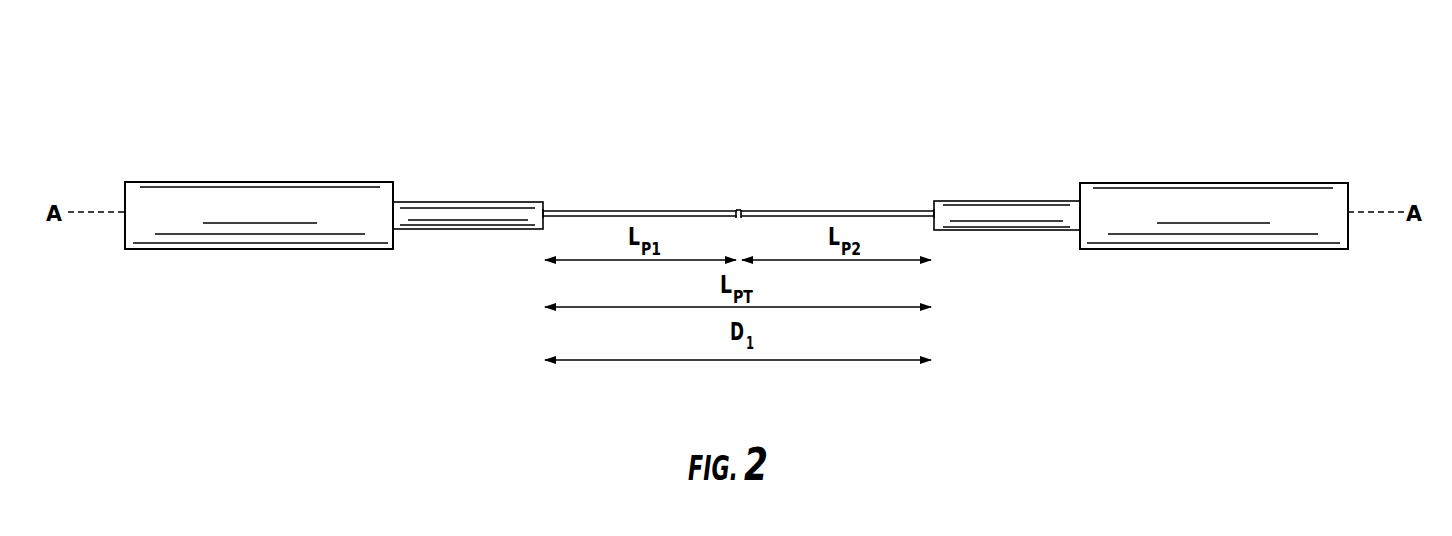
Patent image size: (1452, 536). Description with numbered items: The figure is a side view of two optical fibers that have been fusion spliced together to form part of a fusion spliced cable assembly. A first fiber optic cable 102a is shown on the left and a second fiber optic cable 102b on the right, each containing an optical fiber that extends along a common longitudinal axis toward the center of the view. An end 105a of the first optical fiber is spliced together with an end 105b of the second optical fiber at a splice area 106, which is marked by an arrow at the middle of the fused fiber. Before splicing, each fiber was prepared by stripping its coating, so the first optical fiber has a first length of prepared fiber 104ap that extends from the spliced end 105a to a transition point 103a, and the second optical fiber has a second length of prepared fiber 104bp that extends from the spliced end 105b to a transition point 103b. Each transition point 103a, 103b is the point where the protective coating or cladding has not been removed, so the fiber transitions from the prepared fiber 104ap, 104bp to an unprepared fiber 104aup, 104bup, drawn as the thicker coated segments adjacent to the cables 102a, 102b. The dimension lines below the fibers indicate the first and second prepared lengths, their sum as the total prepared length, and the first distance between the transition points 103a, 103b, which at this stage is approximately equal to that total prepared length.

The first fiber optic cable 102a is at (230, 228).
The second fiber optic cable 102b is at (1185, 235).
The transition point of the first optical fiber 103a is at (543, 210).
The transition point of the second optical fiber 103b is at (935, 200).
The unprepared fiber of the first optical fiber 104aup is at (430, 218).
The prepared fiber of the first optical fiber 104ap is at (630, 211).
The prepared fiber of the second optical fiber 104bp is at (863, 210).
The unprepared fiber of the second optical fiber 104bup is at (1018, 212).
The end of the first optical fiber 105a is at (736, 212).
The end of the second optical fiber 105b is at (742, 212).
The splice area 106 is at (739, 192).